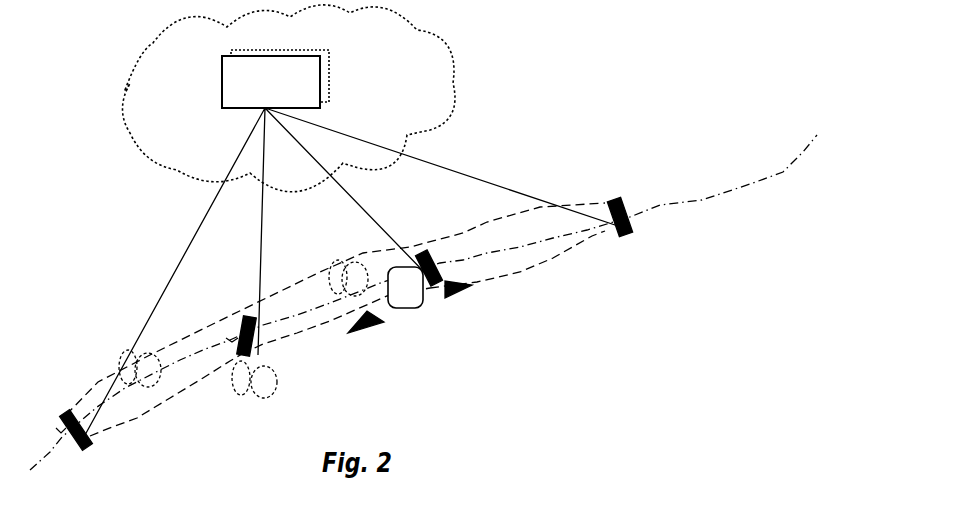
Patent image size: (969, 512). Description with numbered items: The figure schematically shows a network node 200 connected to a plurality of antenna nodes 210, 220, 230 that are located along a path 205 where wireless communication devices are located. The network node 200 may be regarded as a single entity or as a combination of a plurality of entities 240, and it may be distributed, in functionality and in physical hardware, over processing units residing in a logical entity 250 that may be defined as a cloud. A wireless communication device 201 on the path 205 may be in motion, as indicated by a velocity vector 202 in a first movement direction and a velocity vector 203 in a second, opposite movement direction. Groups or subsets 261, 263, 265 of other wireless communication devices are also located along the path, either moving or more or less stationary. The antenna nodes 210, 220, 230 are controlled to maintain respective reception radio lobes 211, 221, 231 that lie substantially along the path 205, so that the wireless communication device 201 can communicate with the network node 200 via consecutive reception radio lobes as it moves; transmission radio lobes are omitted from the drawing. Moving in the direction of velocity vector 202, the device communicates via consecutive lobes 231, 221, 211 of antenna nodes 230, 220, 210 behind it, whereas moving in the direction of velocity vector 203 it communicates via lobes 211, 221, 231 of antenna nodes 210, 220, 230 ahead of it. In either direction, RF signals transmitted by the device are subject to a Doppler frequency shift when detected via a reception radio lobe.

The network node 200 is at (222, 90).
The plurality of entities 240 is at (328, 80).
The logical entity 250 is at (450, 93).
The wireless communication device 201 is at (413, 310).
The velocity vector 202 is at (366, 334).
The velocity vector 203 is at (455, 298).
The path 205 is at (703, 201).
The antenna node 210 is at (238, 318).
The reception radio lobe 211 is at (125, 424).
The antenna node 220 is at (425, 252).
The reception radio lobe 221 is at (320, 330).
The antenna node 230 is at (613, 200).
The reception radio lobe 231 is at (563, 253).
The subset of wireless communication devices 261 is at (331, 253).
The subset of wireless communication devices 263 is at (122, 354).
The subset of wireless communication devices 265 is at (259, 400).